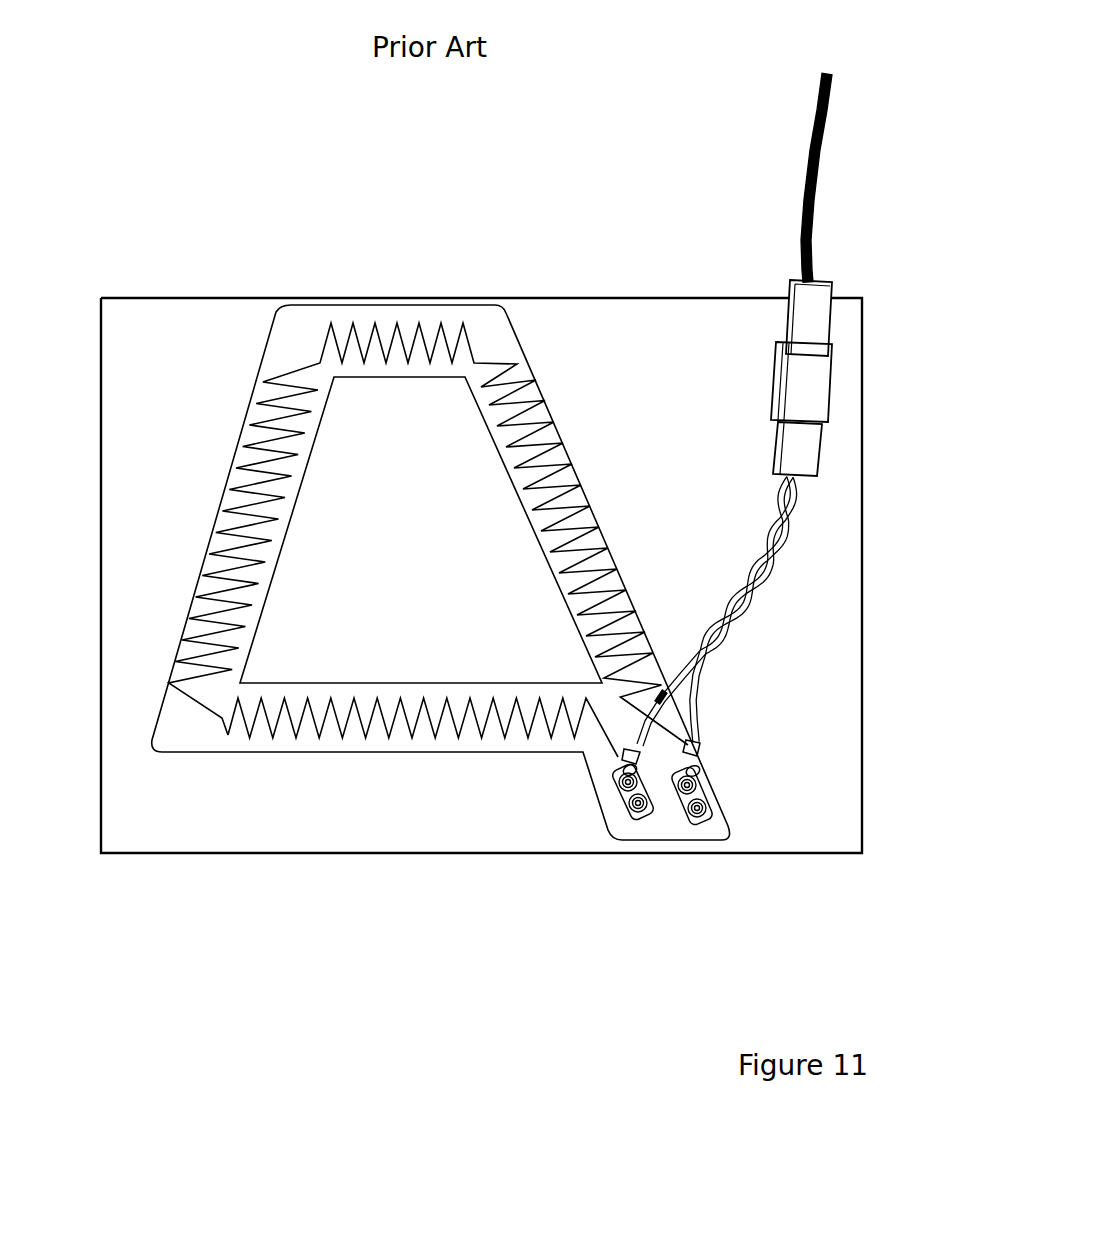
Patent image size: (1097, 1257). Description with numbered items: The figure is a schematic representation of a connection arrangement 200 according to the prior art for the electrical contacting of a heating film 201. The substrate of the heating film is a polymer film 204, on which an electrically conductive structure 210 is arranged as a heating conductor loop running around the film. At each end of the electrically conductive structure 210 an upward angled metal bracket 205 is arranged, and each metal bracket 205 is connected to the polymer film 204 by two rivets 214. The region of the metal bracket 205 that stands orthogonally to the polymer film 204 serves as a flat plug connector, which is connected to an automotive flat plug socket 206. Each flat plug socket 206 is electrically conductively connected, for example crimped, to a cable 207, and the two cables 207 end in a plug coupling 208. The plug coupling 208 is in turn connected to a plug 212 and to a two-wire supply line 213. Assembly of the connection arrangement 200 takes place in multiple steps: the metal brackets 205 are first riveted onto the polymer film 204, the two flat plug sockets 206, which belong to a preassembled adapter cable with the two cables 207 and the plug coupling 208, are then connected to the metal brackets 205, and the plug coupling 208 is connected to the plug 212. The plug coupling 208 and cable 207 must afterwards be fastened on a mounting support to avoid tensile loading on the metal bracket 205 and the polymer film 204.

The connection arrangement 200 is at (282, 262).
The heating film 201 is at (257, 411).
The polymer film 204 is at (180, 732).
The metal bracket 205 is at (697, 773).
The flat plug socket 206 is at (700, 750).
The cable 207 is at (780, 512).
The plug coupling 208 is at (797, 367).
The electrically conductive structure 210 is at (480, 732).
The plug 212 is at (792, 300).
The two-wire supply line 213 is at (801, 160).
The rivet 214 is at (695, 787).